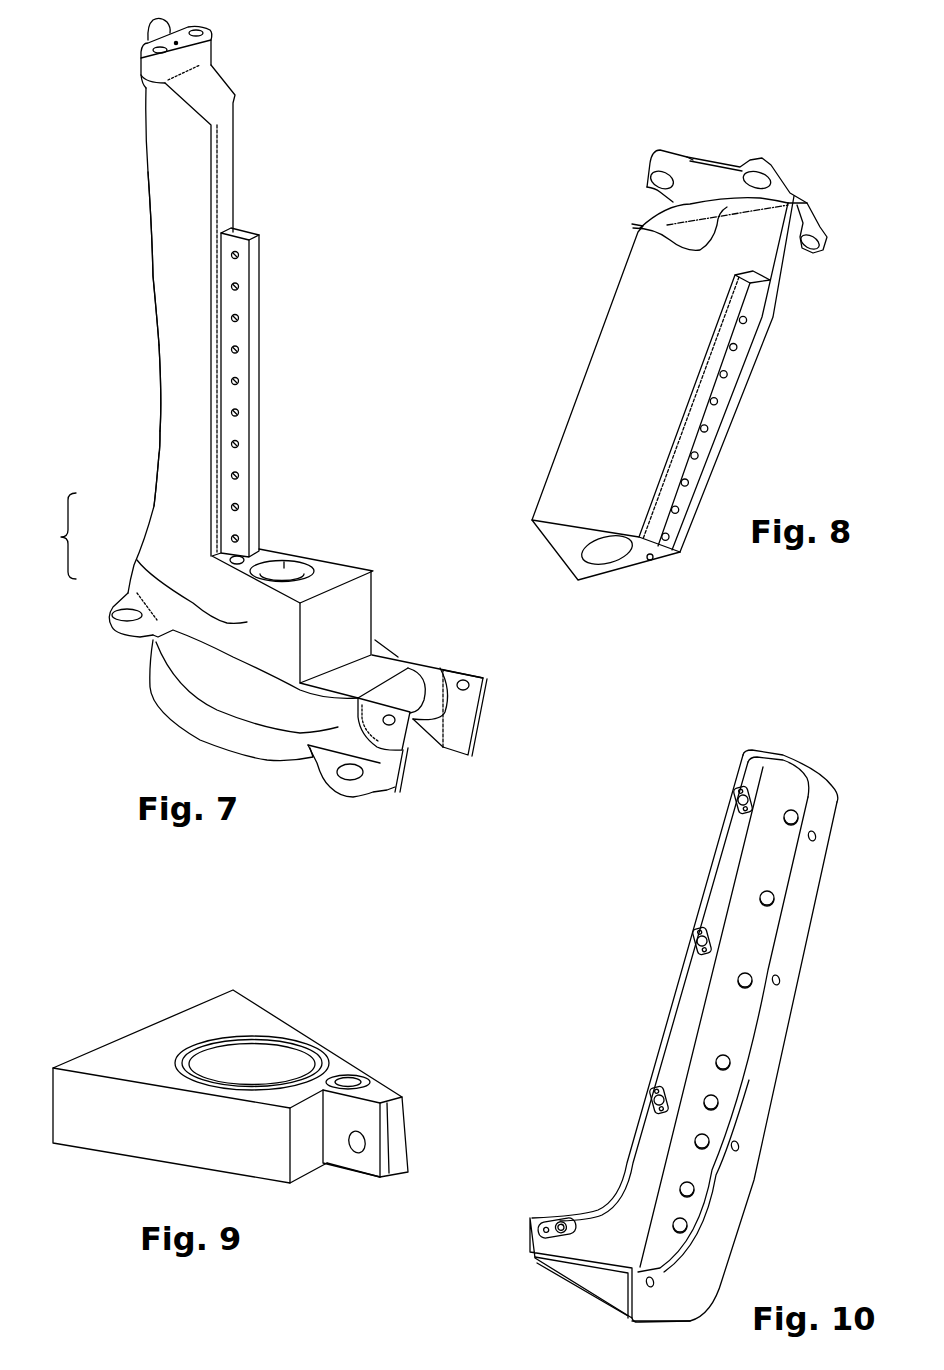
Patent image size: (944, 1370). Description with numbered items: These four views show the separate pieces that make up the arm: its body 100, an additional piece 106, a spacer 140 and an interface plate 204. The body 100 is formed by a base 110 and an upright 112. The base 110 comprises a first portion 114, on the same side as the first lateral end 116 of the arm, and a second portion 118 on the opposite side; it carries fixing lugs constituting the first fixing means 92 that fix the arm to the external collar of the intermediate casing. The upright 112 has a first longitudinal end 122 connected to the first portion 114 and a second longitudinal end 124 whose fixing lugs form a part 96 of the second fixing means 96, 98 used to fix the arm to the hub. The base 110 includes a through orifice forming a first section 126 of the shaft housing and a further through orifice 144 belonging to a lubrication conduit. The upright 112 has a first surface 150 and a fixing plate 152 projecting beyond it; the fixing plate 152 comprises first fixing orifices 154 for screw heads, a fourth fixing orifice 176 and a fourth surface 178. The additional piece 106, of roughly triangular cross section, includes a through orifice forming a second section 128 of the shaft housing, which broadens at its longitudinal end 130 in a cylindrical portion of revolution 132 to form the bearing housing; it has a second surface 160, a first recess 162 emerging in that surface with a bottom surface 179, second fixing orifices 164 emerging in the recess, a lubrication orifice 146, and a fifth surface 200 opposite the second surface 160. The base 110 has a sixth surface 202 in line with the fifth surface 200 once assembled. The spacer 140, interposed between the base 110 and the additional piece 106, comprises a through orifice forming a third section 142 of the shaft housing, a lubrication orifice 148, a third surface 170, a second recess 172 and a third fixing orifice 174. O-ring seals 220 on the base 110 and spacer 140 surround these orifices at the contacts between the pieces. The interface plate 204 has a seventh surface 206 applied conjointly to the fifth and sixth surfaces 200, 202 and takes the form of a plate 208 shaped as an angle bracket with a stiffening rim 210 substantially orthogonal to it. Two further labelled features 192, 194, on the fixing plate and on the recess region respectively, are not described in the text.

In FIG. 7, the first fixing means 92 is at (108, 632).
In FIG. 7, the second fixing means part 96 is at (178, 43).
In FIG. 8, the second fixing means 98 is at (652, 188).
In FIG. 7, the body 100 is at (365, 204).
In FIG. 8, the additional piece 106 is at (641, 592).
In FIG. 7, the base 110 is at (49, 536).
In FIG. 7, the upright 112 is at (165, 262).
In FIG. 7, the first portion 114 is at (145, 538).
In FIG. 7, the first lateral end 116 is at (150, 310).
In FIG. 7, the second portion 118 is at (220, 620).
In FIG. 7, the first longitudinal end 122 is at (180, 512).
In FIG. 7, the second longitudinal end 124 is at (146, 97).
In FIG. 7, the first section 126 is at (284, 568).
In FIG. 8, the second section 128 is at (603, 555).
In FIG. 8, the longitudinal end 130 is at (712, 152).
In FIG. 8, the cylindrical portion of revolution 132 is at (638, 235).
In FIG. 9, the spacer 140 is at (79, 1180).
In FIG. 9, the third section 142 is at (267, 1060).
In FIG. 7, the through orifice 144 is at (243, 557).
In FIG. 8, the through orifice 146 is at (652, 562).
In FIG. 9, the through orifice 148 is at (348, 1077).
In FIG. 7, the first surface 150 is at (233, 170).
In FIG. 7, the fixing plate 152 is at (240, 272).
In FIG. 7, the first fixing orifices 154 is at (238, 320).
In FIG. 8, the second surface 160 is at (783, 262).
In FIG. 8, the first recess 162 is at (754, 306).
In FIG. 8, the second fixing orifices 164 is at (742, 346).
In FIG. 9, the third surface 170 is at (400, 1143).
In FIG. 9, the second recess 172 is at (332, 1167).
In FIG. 9, the third fixing orifice 174 is at (357, 1150).
In FIG. 7, the fourth fixing orifice 176 is at (230, 540).
In FIG. 7, the fourth surface 178 is at (255, 400).
In FIG. 8, the bottom surface 179 is at (693, 393).
In FIG. 7, the perforated rail 192 is at (247, 232).
In FIG. 8, the rail side 194 is at (720, 308).
In FIG. 8, the fifth surface 200 is at (556, 443).
In FIG. 7, the sixth surface 202 is at (340, 622).
In FIG. 10, the interface plate 204 is at (637, 912).
In FIG. 10, the seventh surface 206 is at (781, 1045).
In FIG. 10, the plate 208 is at (757, 928).
In FIG. 10, the stiffening rim 210 is at (700, 995).
In FIG. 7, the O-ring seals 220 is at (320, 565).
In FIG. 9, the O-ring seals 220 is at (230, 1040).